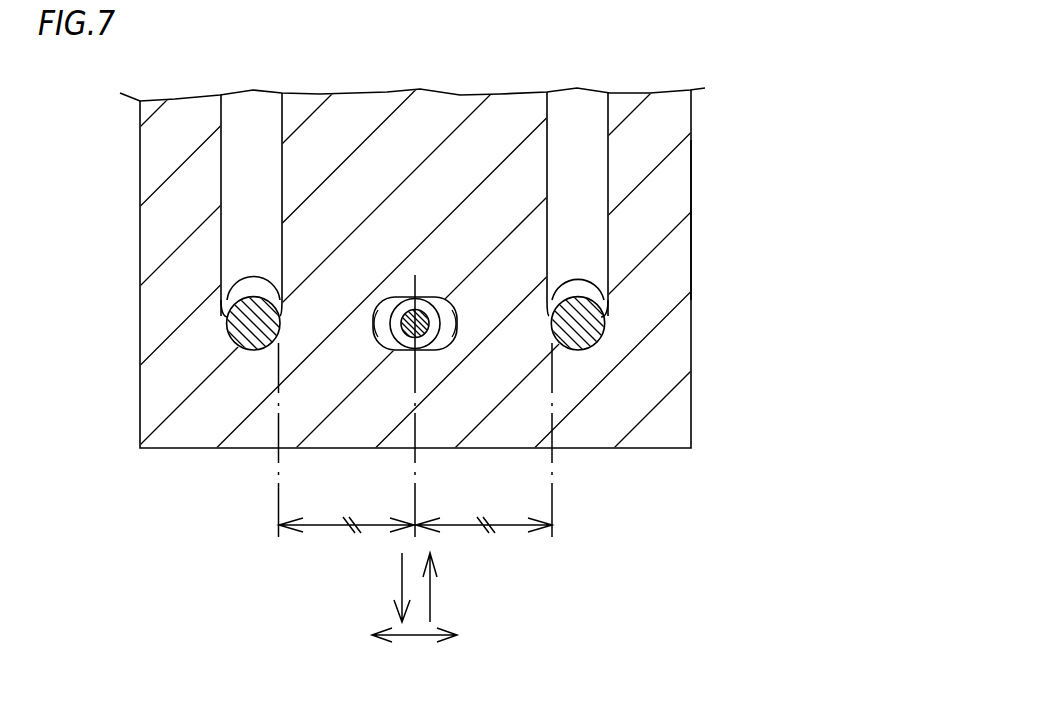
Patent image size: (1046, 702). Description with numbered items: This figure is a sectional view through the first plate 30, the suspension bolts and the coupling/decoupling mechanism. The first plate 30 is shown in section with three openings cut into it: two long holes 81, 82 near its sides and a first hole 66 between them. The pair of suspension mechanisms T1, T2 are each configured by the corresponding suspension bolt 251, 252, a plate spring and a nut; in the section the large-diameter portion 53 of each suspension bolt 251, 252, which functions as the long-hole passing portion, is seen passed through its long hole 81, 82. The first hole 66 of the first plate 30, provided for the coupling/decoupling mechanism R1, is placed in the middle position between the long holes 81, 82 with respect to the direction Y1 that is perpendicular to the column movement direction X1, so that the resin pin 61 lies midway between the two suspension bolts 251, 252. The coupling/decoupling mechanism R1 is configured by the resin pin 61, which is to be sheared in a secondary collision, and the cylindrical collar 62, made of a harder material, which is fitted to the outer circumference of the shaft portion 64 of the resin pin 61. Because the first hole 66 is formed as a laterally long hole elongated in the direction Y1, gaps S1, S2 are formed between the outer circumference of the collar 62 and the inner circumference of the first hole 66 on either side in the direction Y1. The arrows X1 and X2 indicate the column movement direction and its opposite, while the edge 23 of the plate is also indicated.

The first plate 30 is at (678, 165).
The side surface 23 is at (703, 230).
The long hole 81 is at (253, 100).
The long hole 82 is at (577, 100).
The large-diameter portion 53 is at (228, 320).
The suspension bolt 251 is at (231, 289).
The suspension bolt 252 is at (597, 289).
The suspension mechanism T1 is at (208, 334).
The suspension mechanism T2 is at (625, 336).
The resin pin 61 is at (392, 306).
The collar 62 is at (375, 337).
The shaft portion 64 is at (405, 348).
The first hole 66 is at (448, 334).
The coupling/decoupling mechanism R1 is at (439, 365).
The gap S1 is at (378, 318).
The gap S2 is at (451, 316).
The column movement direction X1 is at (430, 592).
The second direction X2 is at (402, 575).
The direction perpendicular to the column movement direction Y1 is at (415, 637).